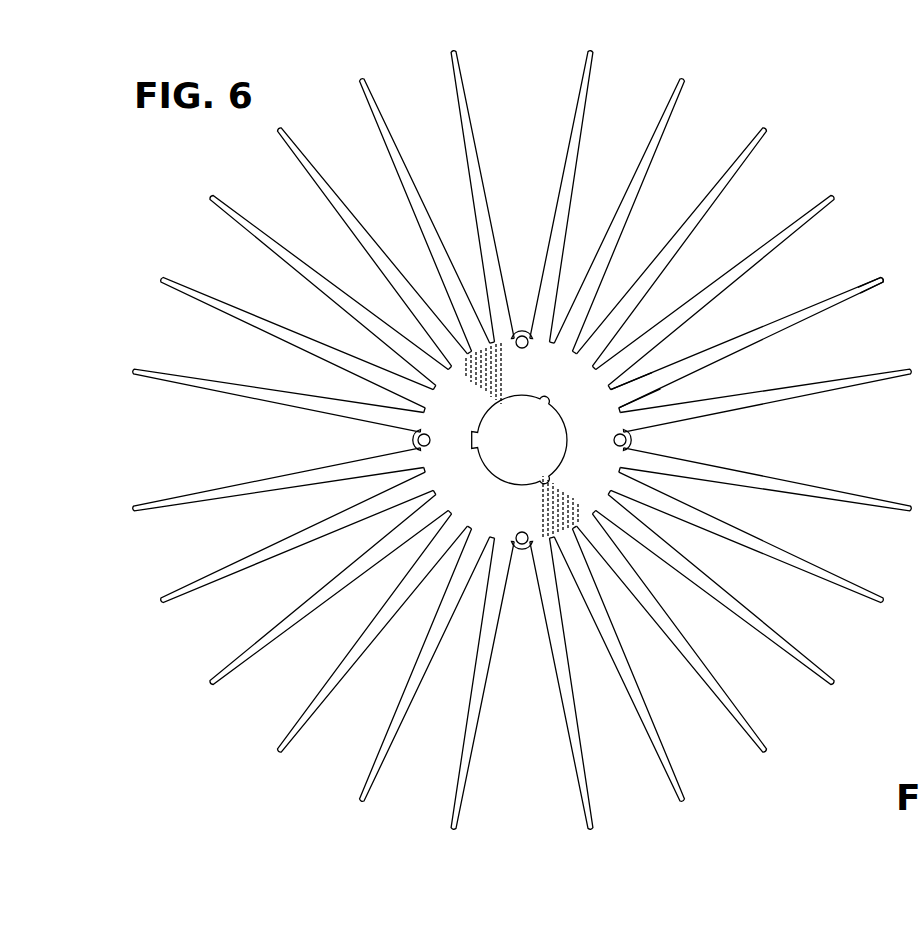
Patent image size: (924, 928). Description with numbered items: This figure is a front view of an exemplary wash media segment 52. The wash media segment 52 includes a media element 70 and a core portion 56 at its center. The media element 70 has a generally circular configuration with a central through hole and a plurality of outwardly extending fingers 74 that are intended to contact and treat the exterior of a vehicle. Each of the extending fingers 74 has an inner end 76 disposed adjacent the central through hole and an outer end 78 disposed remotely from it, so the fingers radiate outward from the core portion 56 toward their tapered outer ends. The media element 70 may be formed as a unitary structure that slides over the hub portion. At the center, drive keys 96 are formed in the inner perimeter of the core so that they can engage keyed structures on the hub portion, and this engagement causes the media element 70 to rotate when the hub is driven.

The wash media segment 52 is at (647, 68).
The media element 70 is at (690, 112).
The outwardly extending finger 74 is at (783, 322).
The outer end 78 is at (868, 292).
The inner end 76 is at (640, 392).
The core portion 56 is at (610, 466).
The drive key 96 is at (547, 473).